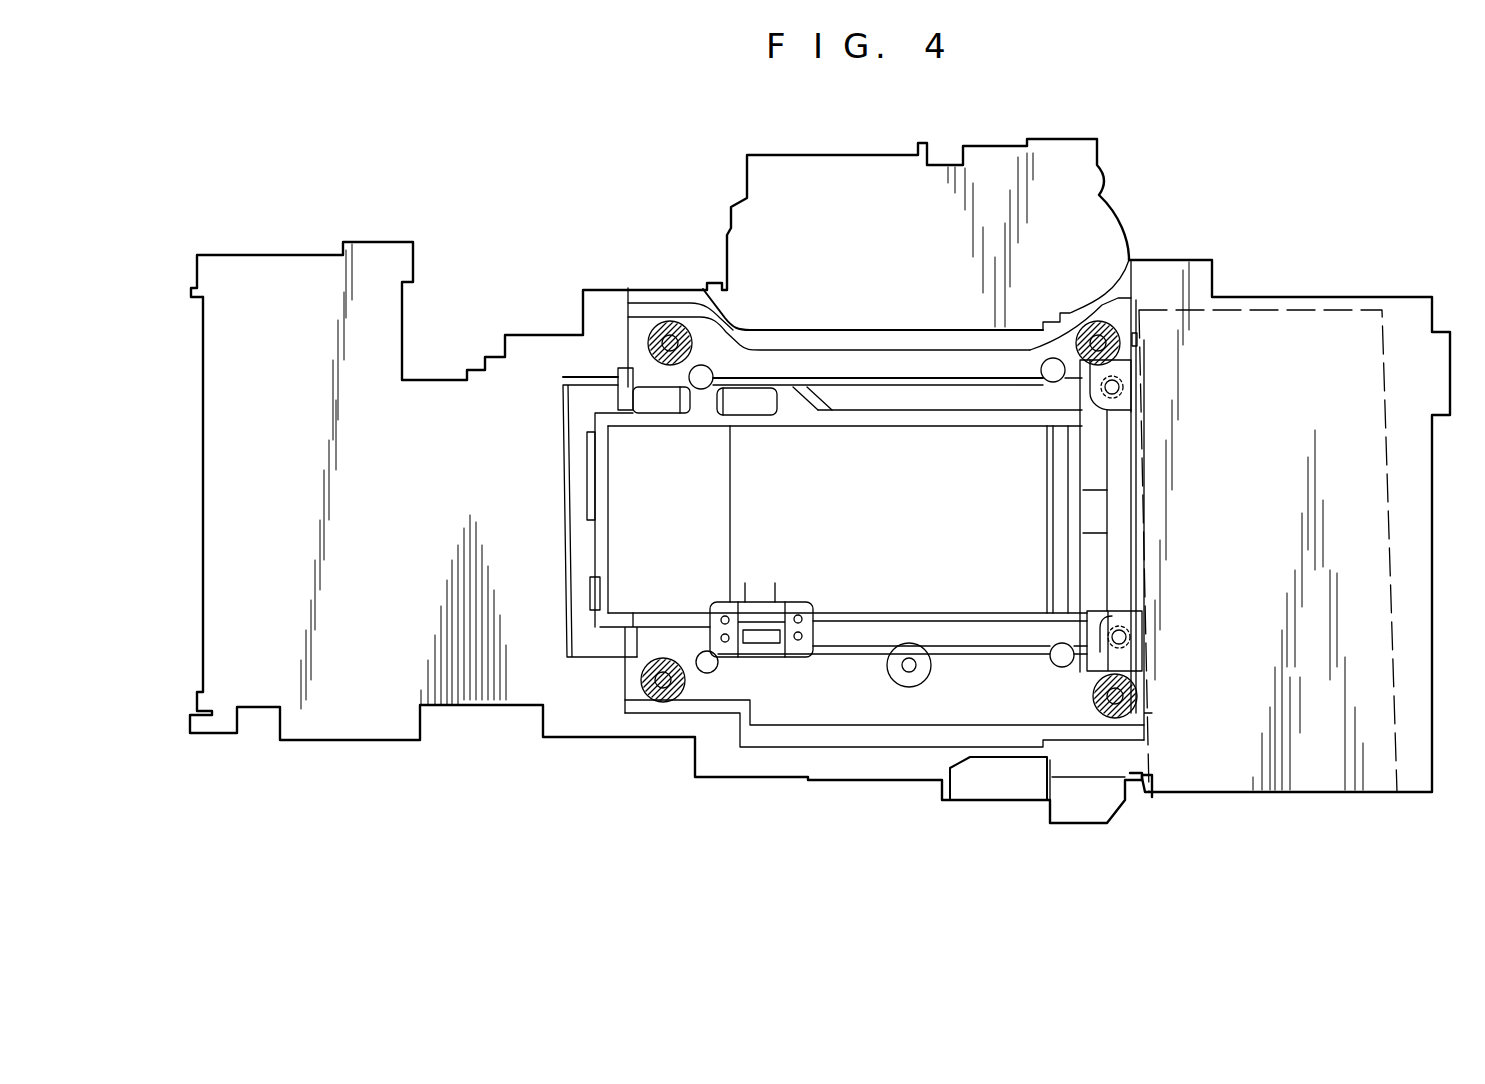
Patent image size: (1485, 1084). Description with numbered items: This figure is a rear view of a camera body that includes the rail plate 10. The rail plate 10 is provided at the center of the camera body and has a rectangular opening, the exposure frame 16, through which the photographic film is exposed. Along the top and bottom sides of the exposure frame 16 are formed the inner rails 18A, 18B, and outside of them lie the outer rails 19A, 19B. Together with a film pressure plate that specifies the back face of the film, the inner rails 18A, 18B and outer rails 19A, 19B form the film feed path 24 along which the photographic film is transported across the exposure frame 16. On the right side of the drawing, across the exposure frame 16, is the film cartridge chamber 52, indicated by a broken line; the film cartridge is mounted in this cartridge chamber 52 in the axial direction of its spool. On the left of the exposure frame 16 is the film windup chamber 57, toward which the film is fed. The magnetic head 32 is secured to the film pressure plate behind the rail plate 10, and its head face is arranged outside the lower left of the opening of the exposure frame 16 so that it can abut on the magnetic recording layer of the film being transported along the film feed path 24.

The rail plate 10 is at (1057, 702).
The exposure frame 16 is at (882, 508).
The inner rail 18A is at (833, 420).
The inner rail 18B is at (890, 611).
The outer rail 19A is at (1007, 378).
The outer rail 19B is at (1002, 645).
The film feed path 24 is at (862, 640).
The magnetic head 32 is at (767, 645).
The film cartridge chamber 52 is at (1262, 308).
The film windup chamber 57 is at (447, 328).